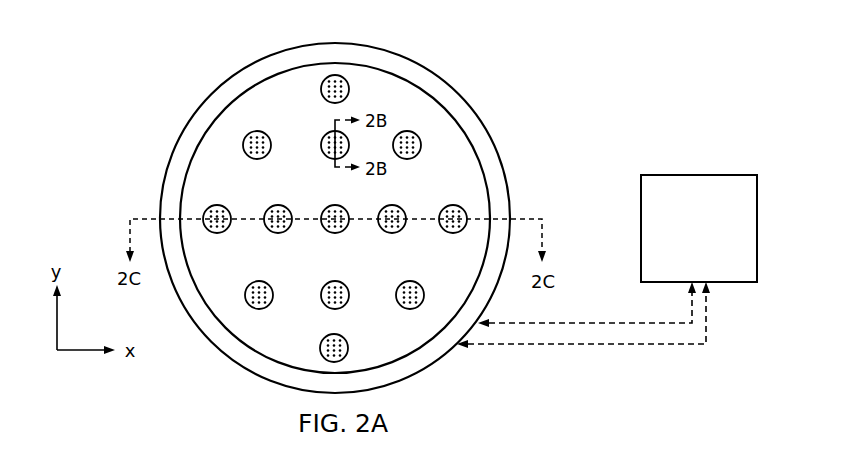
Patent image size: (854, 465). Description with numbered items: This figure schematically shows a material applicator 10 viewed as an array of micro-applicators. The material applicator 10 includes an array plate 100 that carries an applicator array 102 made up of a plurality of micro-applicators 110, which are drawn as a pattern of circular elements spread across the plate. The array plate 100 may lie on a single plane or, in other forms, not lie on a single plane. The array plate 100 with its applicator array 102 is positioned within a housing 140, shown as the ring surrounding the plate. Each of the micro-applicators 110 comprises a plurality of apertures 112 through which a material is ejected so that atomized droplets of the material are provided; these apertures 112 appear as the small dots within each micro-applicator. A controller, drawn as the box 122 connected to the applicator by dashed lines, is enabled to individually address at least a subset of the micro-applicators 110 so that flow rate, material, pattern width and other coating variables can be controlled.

The material applicator 10 is at (536, 94).
The array plate 100 is at (406, 73).
The applicator array 102 is at (202, 162).
The micro-applicators 110 is at (233, 202).
The apertures 112 is at (258, 277).
The controller 122 is at (681, 240).
The housing 140 is at (514, 168).